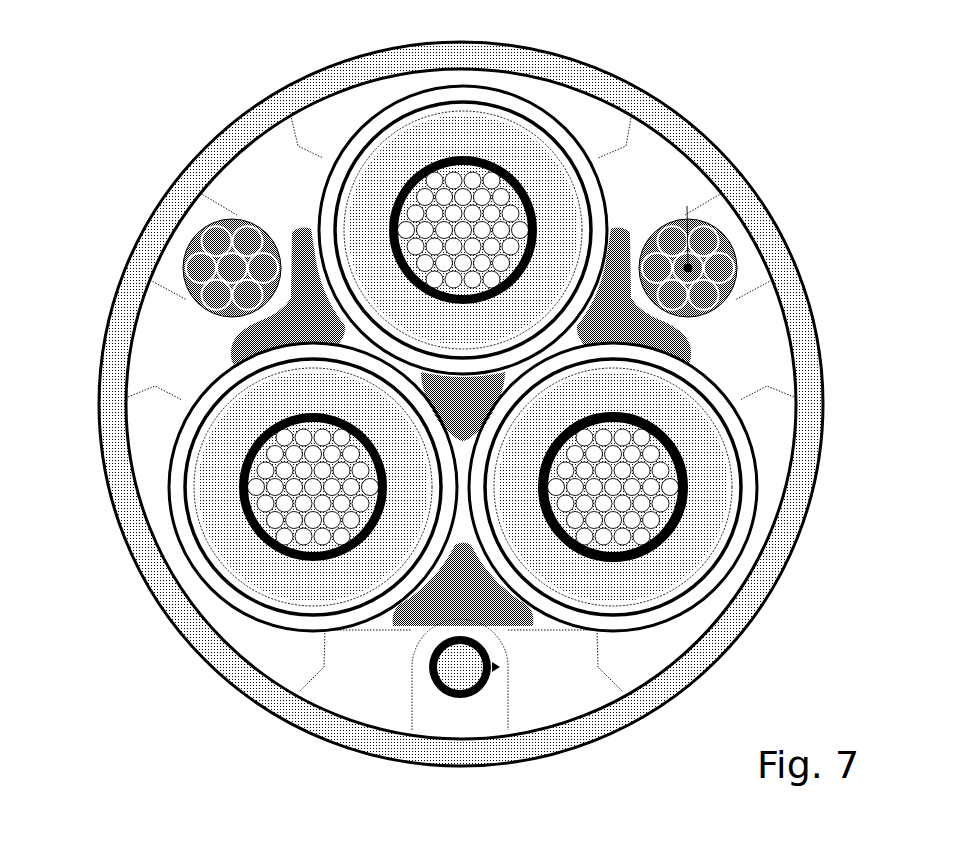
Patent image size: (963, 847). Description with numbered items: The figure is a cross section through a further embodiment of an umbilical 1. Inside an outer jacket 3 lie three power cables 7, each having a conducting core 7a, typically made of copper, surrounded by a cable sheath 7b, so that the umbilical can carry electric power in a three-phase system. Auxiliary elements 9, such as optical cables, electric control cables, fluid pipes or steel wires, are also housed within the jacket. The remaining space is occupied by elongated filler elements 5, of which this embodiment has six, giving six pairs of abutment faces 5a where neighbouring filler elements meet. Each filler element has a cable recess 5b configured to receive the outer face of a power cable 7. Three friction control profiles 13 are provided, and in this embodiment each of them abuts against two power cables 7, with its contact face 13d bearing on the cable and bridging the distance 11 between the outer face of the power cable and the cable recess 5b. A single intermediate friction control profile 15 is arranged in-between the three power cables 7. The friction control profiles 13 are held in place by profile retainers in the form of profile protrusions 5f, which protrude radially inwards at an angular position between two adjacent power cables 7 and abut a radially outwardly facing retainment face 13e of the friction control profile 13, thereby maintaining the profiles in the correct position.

The umbilical 1 is at (233, 55).
The outer jacket 3 is at (565, 732).
The elongated filler element 5 is at (337, 110).
The abutment face 5a is at (610, 157).
The cable recess 5b is at (367, 160).
The profile protrusion 5f is at (458, 407).
The power cable 7 is at (273, 574).
The conducting core 7a is at (648, 578).
The cable sheath 7b is at (617, 512).
The auxiliary element 9 is at (703, 257).
The distance 11 is at (240, 634).
The friction control profile 13 is at (455, 583).
The contact face 13d is at (338, 273).
The retainment face 13e is at (620, 357).
The intermediate friction control profile 15 is at (545, 467).